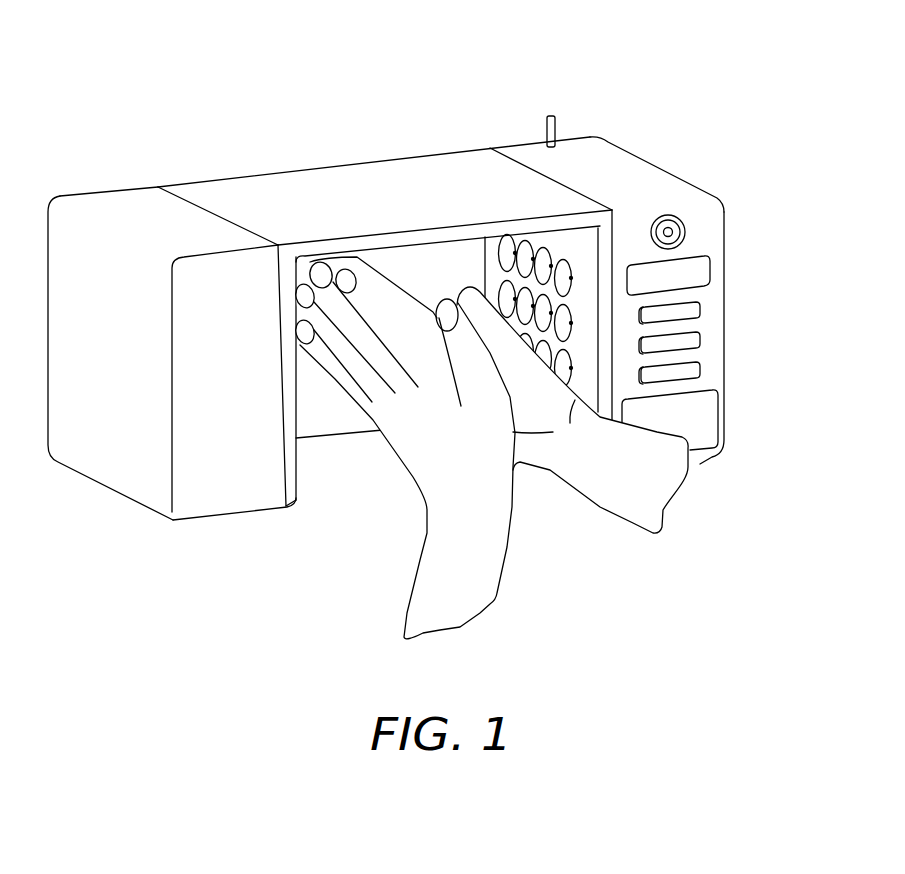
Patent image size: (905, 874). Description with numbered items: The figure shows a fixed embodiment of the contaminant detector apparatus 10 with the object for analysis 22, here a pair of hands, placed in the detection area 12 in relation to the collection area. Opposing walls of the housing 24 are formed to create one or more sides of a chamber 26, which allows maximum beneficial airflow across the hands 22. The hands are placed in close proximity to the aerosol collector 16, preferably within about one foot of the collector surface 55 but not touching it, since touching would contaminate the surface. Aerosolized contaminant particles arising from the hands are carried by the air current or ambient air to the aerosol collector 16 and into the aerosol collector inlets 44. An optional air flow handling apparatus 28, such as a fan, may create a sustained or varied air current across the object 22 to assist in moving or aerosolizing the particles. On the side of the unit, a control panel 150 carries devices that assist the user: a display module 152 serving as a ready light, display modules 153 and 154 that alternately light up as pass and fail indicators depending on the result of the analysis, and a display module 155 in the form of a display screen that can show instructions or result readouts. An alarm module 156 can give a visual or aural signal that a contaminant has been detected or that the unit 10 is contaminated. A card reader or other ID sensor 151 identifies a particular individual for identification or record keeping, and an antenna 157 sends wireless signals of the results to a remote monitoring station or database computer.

The contaminant detector apparatus 10 is at (463, 108).
The detection area 12 is at (376, 484).
The aerosol collector 16 is at (562, 238).
The object for analysis 22 is at (415, 575).
The housing 24 is at (318, 165).
The chamber 26 is at (321, 482).
The air flow handling apparatus 28 is at (90, 192).
The aerosol collector inlets 44 is at (561, 273).
The collector surface 55 is at (576, 305).
The control panel 150 is at (655, 165).
The card reader or other ID sensor 151 is at (724, 418).
The display module (ready light) 152 is at (700, 370).
The display module (pass/fail indicator) 153 is at (700, 340).
The display module (pass/fail indicator) 154 is at (700, 310).
The display module (display screen) 155 is at (712, 272).
The alarm module 156 is at (687, 228).
The antenna 157 is at (556, 126).